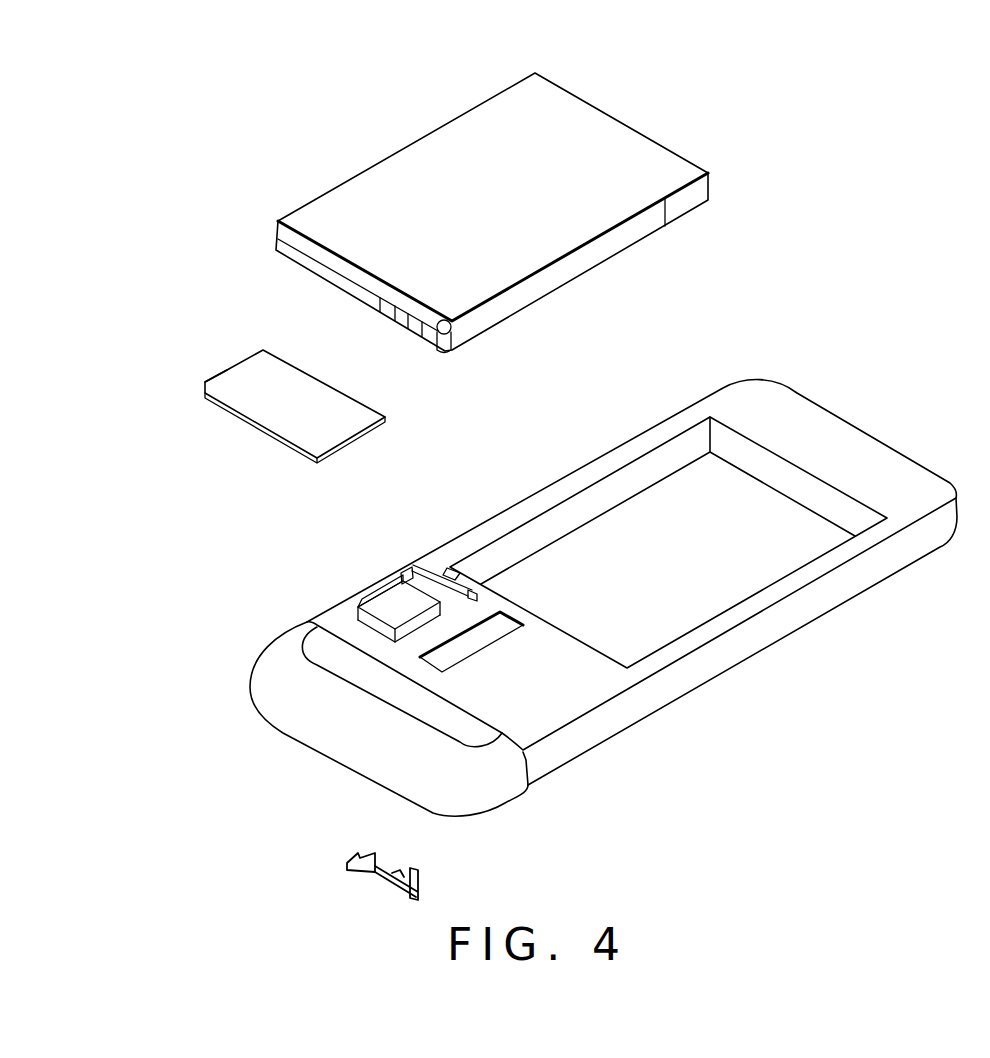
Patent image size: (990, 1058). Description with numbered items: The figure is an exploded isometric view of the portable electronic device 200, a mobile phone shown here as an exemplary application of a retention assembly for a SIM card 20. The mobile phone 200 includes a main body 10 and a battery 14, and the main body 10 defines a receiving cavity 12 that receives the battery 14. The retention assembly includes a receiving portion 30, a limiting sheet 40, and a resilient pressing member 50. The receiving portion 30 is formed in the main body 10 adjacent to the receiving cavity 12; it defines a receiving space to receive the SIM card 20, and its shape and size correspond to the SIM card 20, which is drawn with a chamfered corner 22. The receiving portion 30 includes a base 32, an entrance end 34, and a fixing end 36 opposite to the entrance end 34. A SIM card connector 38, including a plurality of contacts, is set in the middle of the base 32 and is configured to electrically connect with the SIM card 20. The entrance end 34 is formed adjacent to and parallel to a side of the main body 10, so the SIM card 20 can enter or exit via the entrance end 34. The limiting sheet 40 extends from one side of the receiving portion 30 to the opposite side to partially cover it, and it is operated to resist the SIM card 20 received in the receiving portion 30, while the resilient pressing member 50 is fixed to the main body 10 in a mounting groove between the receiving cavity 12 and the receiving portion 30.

The portable electronic device 200 is at (303, 110).
The battery 14 is at (635, 160).
The SIM card 20 is at (255, 388).
The chamfered corner 22 is at (223, 370).
The main body 10 is at (889, 483).
The receiving cavity 12 is at (709, 585).
The receiving portion 30 is at (262, 517).
The base 32 is at (360, 622).
The entrance end 34 is at (380, 597).
The SIM card connector 38 is at (443, 608).
The fixing end 36 is at (470, 642).
The limiting sheet 40 is at (420, 643).
The resilient pressing member 50 is at (370, 873).